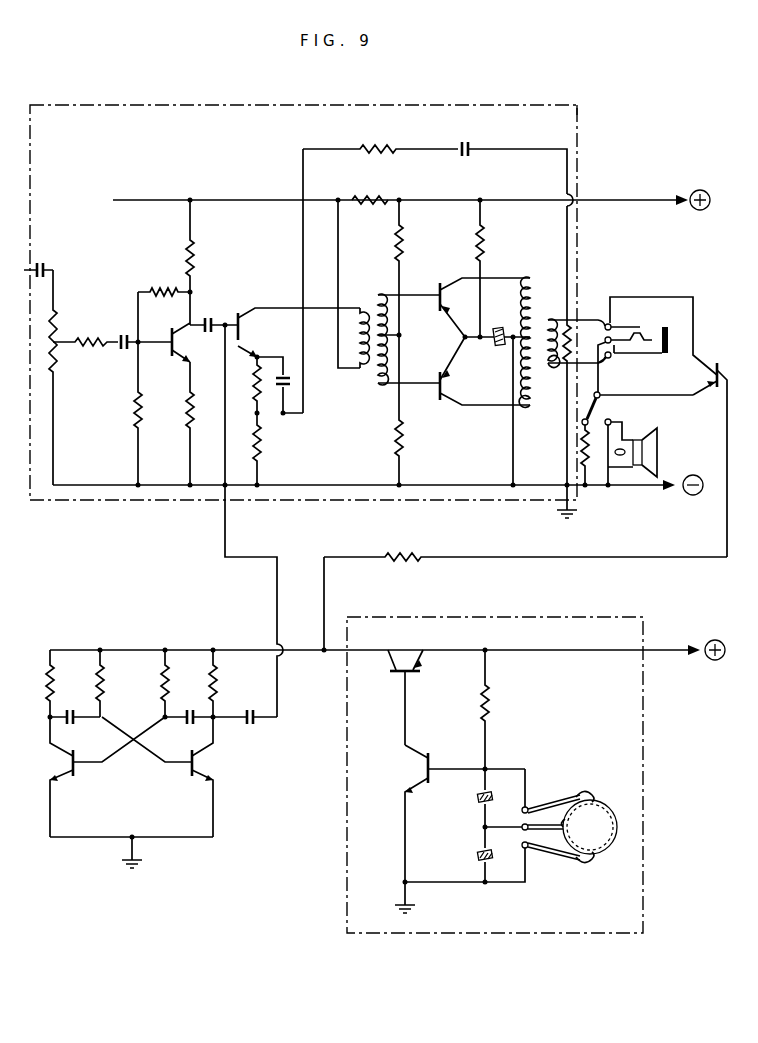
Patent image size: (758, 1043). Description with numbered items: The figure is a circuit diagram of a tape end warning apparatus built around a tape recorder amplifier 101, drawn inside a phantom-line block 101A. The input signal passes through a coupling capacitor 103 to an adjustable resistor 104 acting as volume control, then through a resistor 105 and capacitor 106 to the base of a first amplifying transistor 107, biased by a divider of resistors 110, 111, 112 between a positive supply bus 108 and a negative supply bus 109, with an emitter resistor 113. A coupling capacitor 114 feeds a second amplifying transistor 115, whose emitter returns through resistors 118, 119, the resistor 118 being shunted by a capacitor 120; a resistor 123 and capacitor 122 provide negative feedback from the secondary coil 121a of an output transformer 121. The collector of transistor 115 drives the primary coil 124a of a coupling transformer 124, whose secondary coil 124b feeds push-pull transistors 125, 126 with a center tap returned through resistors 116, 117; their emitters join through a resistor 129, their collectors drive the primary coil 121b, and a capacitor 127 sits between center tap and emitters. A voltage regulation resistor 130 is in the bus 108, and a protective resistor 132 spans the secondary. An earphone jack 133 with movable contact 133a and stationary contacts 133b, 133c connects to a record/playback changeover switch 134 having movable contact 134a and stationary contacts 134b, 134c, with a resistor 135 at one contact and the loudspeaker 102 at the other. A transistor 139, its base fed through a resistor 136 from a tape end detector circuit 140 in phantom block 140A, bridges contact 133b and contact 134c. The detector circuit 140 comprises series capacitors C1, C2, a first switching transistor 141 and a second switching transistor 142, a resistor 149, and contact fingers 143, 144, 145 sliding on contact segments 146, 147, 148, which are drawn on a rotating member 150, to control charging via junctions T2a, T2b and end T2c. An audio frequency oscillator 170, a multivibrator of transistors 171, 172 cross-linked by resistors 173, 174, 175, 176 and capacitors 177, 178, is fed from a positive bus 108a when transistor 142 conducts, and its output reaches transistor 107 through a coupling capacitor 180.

The amplifier 101 is at (252, 125).
The block 101A is at (579, 124).
The loudspeaker 102 is at (657, 454).
The coupling capacitor 103 is at (42, 266).
The adjustable resistor 104 is at (56, 316).
The resistor 105 is at (90, 344).
The capacitor 106 is at (124, 348).
The first amplifying transistor 107 is at (173, 348).
The positive supply bus 108 is at (634, 200).
The positive bus 108a is at (668, 650).
The negative supply bus 109 is at (650, 486).
The resistor 110 is at (194, 262).
The resistor 111 is at (156, 288).
The resistor 112 is at (135, 410).
The resistor 113 is at (186, 408).
The coupling capacitor 114 is at (205, 318).
The second amplifying transistor 115 is at (241, 315).
The resistor 116 is at (404, 242).
The resistor 117 is at (400, 432).
The resistor 118 is at (256, 383).
The resistor 119 is at (262, 446).
The capacitor 120 is at (284, 368).
The output transformer 121 is at (555, 326).
The secondary coil 121a is at (552, 318).
The primary coil 121b is at (526, 296).
The capacitor 122 is at (466, 148).
The resistor 123 is at (374, 148).
The coupling transformer 124 is at (379, 339).
The primary coil 124a is at (355, 366).
The secondary coil 124b is at (373, 298).
The transistor 125 is at (440, 296).
The transistor 126 is at (436, 374).
The capacitor 127 is at (498, 344).
The resistor 129 is at (482, 238).
The voltage regulation resistor 130 is at (364, 197).
The protective resistor 132 is at (565, 360).
The earphone jack 133 is at (660, 332).
The movable contact 133a is at (608, 322).
The stationary contact 133b is at (612, 338).
The stationary contact 133c is at (611, 358).
The record/playback changeover switch 134 is at (612, 454).
The movable contact 134a is at (623, 396).
The stationary contact 134b is at (582, 422).
The stationary contact 134c is at (615, 422).
The resistor 135 is at (580, 454).
The resistor 136 is at (406, 556).
The transistor 139 is at (718, 362).
The tape end detector circuit 140 is at (482, 800).
The phantom lines 140A is at (479, 935).
The first switching transistor 141 is at (426, 766).
The second switching transistor 142 is at (409, 674).
The contact finger 143 is at (539, 858).
The contact finger 144 is at (530, 822).
The contact finger 145 is at (548, 803).
The contact segment 146 is at (609, 815).
The contact segment 147 is at (576, 862).
The contact segment 148 is at (614, 848).
The resistor 149 is at (489, 704).
The cam wheel 150 is at (596, 826).
The audio frequency oscillator 170 is at (166, 767).
The transistor 171 is at (74, 778).
The transistor 172 is at (190, 778).
The resistor 173 is at (72, 677).
The resistor 174 is at (120, 677).
The resistor 175 is at (185, 677).
The resistor 176 is at (233, 677).
The capacitor 177 is at (74, 723).
The capacitor 178 is at (190, 723).
The coupling capacitor 180 is at (251, 722).
The junction T2a is at (482, 768).
The junction T2b is at (484, 828).
The end T2c is at (483, 884).
The capacitor C1 is at (476, 794).
The capacitor C2 is at (484, 854).